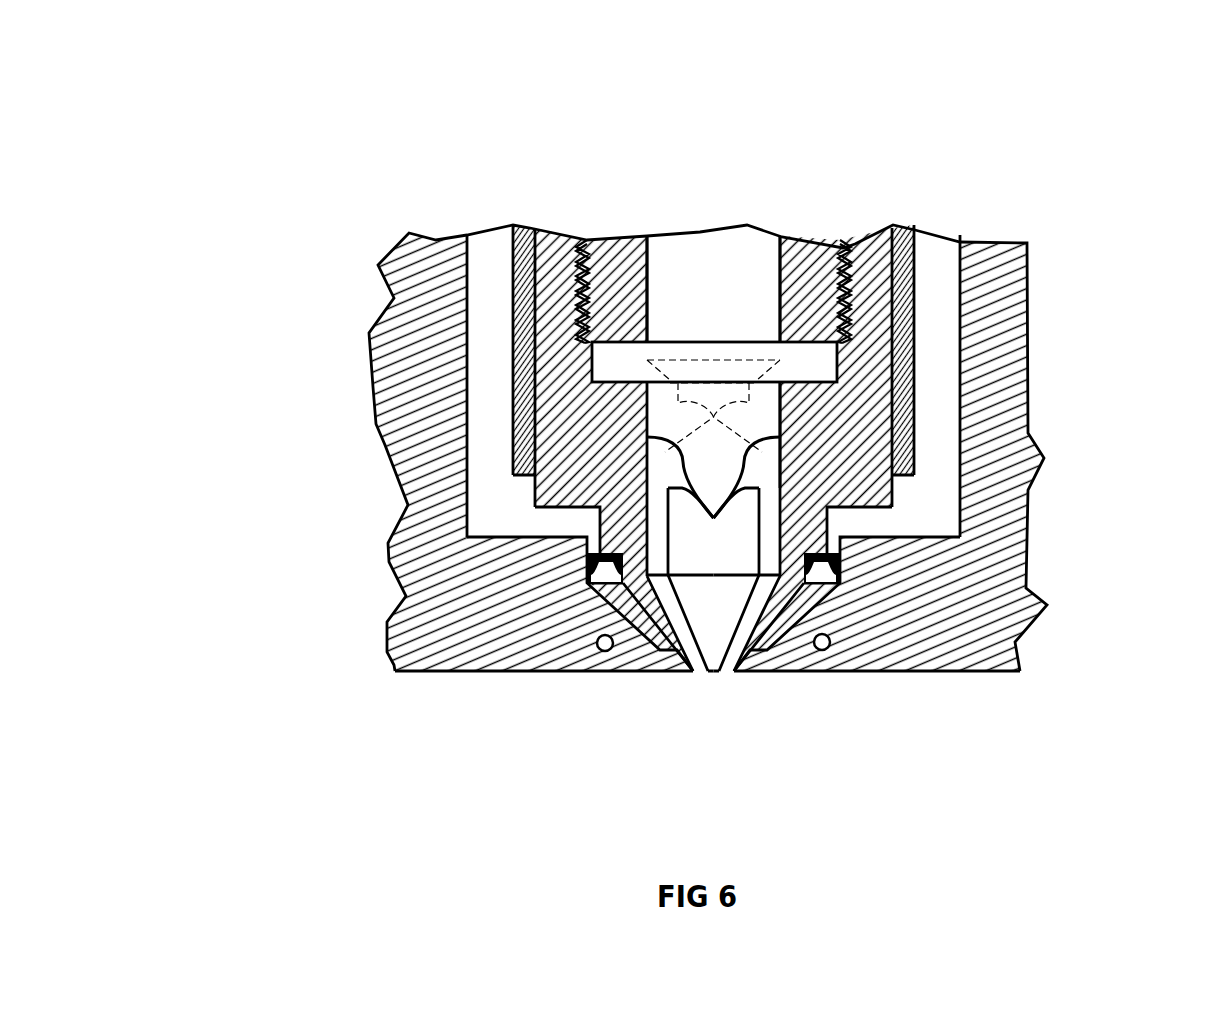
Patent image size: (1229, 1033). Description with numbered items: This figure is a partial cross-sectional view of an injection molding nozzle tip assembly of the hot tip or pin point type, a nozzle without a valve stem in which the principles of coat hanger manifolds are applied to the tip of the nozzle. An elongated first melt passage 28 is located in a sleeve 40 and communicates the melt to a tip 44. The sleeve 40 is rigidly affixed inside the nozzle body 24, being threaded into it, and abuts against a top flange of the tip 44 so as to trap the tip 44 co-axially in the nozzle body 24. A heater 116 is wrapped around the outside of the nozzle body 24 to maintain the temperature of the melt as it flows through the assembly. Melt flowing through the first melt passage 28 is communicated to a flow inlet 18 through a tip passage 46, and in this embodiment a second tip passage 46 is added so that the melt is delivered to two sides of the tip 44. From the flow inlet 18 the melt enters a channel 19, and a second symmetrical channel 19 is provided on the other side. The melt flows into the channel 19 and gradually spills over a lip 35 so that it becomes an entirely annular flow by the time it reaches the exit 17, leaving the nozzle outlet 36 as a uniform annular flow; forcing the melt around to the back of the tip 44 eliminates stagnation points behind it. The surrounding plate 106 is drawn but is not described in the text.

The exit 17 is at (729, 562).
The flow inlet 18 is at (665, 468).
The channel 19 is at (690, 480).
The nozzle body 24 is at (868, 262).
The first melt passage 28 is at (722, 285).
The lip 35 is at (838, 566).
The nozzle outlet 36 is at (695, 668).
The sleeve 40 is at (809, 265).
The tip 44 is at (817, 360).
The tip passage 46 is at (683, 423).
The mold plate 106 is at (968, 628).
The heater 116 is at (785, 440).